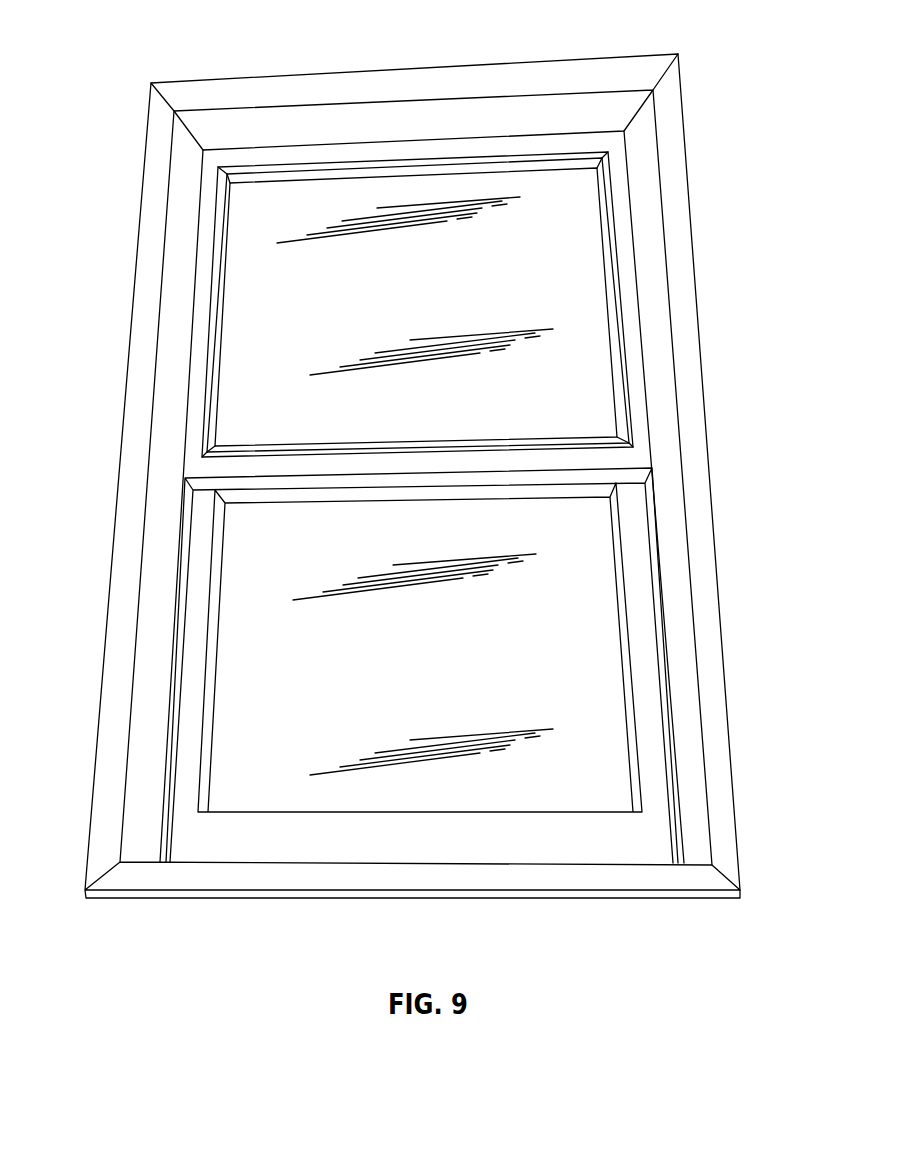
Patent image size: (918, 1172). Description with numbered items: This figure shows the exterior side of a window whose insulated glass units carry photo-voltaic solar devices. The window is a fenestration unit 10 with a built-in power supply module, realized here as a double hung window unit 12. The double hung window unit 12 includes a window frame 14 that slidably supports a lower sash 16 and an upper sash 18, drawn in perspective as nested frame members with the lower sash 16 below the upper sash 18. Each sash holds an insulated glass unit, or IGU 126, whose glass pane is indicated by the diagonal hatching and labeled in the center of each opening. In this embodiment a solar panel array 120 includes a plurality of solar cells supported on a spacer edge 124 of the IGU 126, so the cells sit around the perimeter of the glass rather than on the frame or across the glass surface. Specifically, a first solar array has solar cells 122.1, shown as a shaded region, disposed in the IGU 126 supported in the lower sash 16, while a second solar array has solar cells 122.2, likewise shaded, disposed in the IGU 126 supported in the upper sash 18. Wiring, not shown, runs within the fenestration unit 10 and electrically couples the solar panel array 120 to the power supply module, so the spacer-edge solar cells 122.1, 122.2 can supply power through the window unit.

The fenestration unit 10 is at (652, 923).
The double hung window unit 12 is at (430, 450).
The window frame 14 is at (585, 110).
The lower sash 16 is at (652, 753).
The upper sash 18 is at (617, 182).
The solar panel array 120 is at (226, 340).
The solar cells 122.1 is at (213, 597).
The solar cells 122.2 is at (375, 178).
The spacer edge 124 is at (563, 190).
The insulated glass unit 126 is at (428, 303).